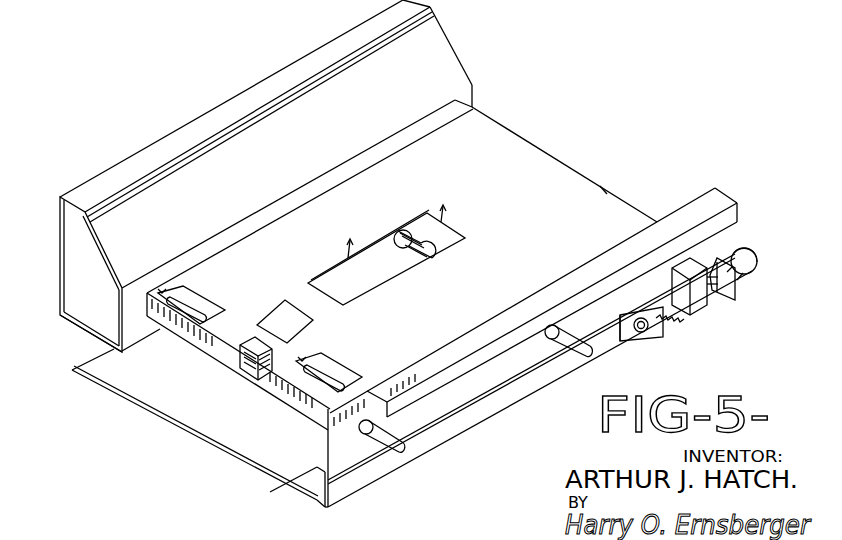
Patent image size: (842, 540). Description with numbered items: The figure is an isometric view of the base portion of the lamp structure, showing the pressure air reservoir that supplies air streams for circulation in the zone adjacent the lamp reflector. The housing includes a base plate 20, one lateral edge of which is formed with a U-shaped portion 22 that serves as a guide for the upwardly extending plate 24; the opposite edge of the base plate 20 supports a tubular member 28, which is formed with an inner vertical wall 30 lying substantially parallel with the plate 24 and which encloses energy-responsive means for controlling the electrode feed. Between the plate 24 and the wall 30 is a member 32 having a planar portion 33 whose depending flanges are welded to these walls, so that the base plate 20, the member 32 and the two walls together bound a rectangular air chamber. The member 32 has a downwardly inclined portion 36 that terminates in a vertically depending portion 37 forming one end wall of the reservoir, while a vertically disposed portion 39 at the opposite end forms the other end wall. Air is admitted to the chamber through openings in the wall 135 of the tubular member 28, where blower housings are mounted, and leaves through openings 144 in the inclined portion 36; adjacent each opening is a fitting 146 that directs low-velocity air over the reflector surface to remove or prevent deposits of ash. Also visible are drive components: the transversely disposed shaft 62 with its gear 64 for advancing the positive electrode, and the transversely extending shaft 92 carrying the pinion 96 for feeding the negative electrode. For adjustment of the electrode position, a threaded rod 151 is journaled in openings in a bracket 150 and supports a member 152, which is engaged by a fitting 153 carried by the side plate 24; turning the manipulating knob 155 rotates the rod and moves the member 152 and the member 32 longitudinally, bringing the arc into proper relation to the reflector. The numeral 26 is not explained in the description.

The base plate 20 is at (212, 448).
The U-shaped portion 22 is at (337, 497).
The upwardly extending plate 24 is at (353, 458).
The channel bottom wall 26 is at (78, 331).
The tubular member 28 is at (150, 180).
The inner vertical wall 30 is at (123, 322).
The member 32 is at (510, 110).
The planar portion 33 is at (537, 170).
The downwardly inclined portion 36 is at (375, 257).
The vertically depending portion 37 is at (173, 332).
The vertically disposed portion 39 is at (604, 190).
The transversely disposed shaft 62 is at (572, 352).
The gear 64 is at (410, 258).
The transversely extending shaft 92 is at (403, 452).
The pinion 96 is at (253, 372).
The wall 135 is at (62, 258).
The openings 144 is at (240, 307).
The fitting 146 is at (182, 285).
The bracket 150 is at (717, 290).
The threaded rod 151 is at (668, 317).
The member 152 is at (697, 313).
The fitting 153 is at (700, 270).
The manipulating knob 155 is at (757, 257).